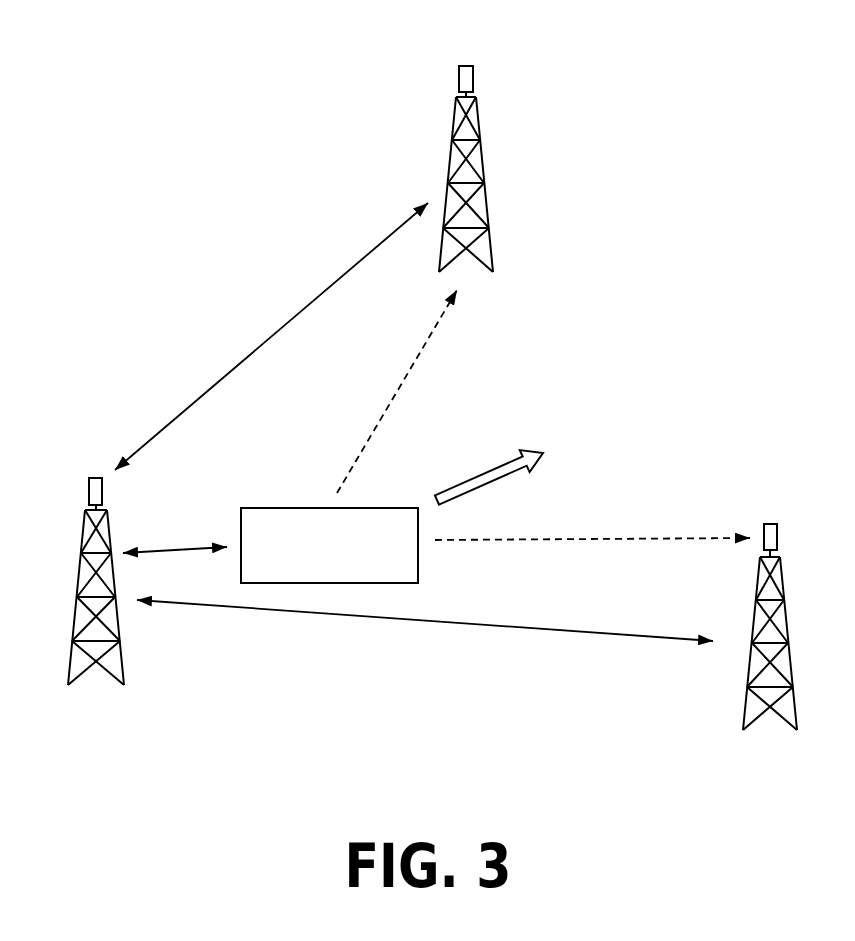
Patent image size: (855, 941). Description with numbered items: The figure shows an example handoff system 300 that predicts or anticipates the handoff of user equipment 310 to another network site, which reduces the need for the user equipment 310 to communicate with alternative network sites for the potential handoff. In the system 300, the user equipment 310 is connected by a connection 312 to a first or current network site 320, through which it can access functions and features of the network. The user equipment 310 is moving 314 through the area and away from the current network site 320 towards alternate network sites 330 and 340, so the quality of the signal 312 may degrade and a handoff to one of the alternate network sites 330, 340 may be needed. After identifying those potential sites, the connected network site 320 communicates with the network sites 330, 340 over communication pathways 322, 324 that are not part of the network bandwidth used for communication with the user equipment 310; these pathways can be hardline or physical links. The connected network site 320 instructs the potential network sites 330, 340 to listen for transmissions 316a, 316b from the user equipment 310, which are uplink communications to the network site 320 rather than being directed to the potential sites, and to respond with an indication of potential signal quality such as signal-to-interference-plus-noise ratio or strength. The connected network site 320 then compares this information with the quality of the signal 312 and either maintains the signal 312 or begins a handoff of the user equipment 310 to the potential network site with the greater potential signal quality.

The handoff system 300 is at (711, 121).
The user equipment 310 is at (286, 508).
The connection 312 is at (173, 548).
The movement 314 is at (487, 470).
The transmission 316a is at (402, 383).
The transmission 316b is at (592, 538).
The current network site 320 is at (88, 492).
The communication pathway 322 is at (271, 335).
The communication pathway 324 is at (549, 628).
The alternate network site 330 is at (466, 66).
The alternate network site 340 is at (770, 523).